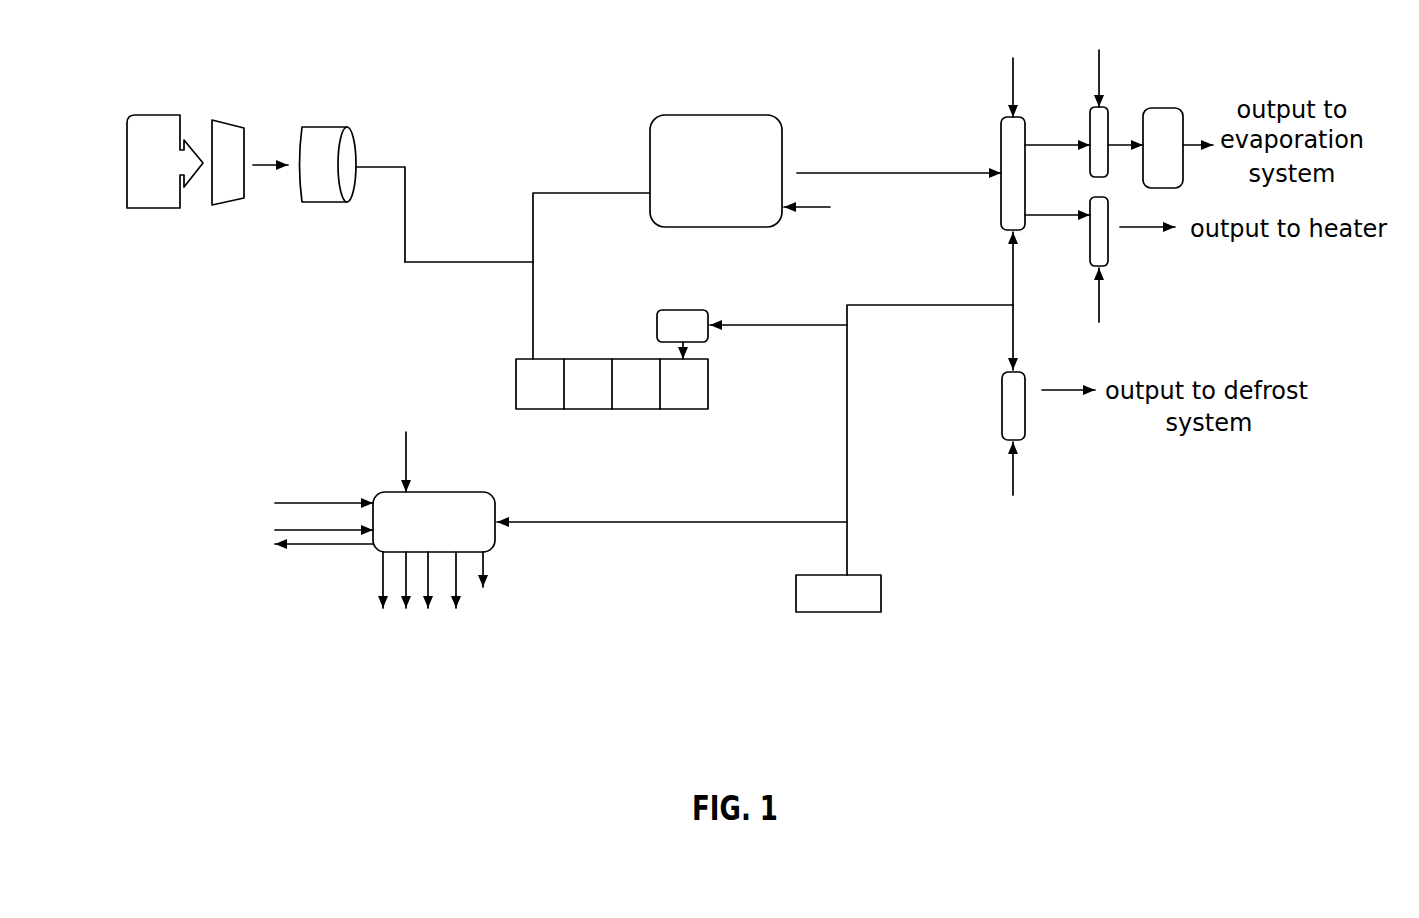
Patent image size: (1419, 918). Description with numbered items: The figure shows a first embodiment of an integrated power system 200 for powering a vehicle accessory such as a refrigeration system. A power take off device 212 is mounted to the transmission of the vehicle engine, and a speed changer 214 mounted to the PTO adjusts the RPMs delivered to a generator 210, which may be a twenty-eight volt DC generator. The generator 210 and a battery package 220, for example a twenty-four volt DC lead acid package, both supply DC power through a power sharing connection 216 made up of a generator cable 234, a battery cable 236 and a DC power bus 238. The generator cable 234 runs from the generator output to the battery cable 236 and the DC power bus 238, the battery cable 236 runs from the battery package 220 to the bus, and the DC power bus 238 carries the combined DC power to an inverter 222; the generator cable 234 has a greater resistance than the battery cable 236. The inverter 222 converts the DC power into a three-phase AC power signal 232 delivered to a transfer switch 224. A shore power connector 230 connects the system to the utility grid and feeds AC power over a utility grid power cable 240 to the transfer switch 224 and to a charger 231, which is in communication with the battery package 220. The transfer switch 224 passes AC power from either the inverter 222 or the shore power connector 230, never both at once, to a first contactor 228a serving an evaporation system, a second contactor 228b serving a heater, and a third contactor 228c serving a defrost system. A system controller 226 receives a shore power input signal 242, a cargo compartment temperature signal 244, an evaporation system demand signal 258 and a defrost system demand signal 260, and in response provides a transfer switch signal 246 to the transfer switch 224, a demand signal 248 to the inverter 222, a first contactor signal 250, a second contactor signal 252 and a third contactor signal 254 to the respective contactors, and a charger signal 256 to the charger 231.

The integrated power system 200 is at (1022, 592).
The generator 210 is at (330, 127).
The power take off (PTO) device 212 is at (153, 115).
The speed changer 214 is at (229, 120).
The power sharing connection 216 is at (470, 262).
The battery package 220 is at (516, 388).
The inverter 222 is at (715, 118).
The transfer switch 224 is at (1001, 145).
The system controller 226 is at (455, 500).
The first contactor 228a is at (1108, 118).
The second contactor 228b is at (1108, 252).
The third contactor 228c is at (1025, 415).
The shore power connector 230 is at (837, 597).
The charger 231 is at (684, 310).
The AC power signal 232 is at (872, 173).
The generator cable 234 is at (405, 233).
The battery cable 236 is at (533, 313).
The DC power bus 238 is at (590, 193).
The utility grid power cable 240 is at (847, 428).
The shore power input signal 242 is at (598, 522).
The cargo compartment temperature signal 244 is at (406, 455).
The transfer switch signal 246 is at (483, 563).
The demand signal 248 is at (456, 590).
The first contactor signal 250 is at (428, 582).
The second contactor signal 252 is at (406, 580).
The third contactor signal 254 is at (383, 575).
The charger signal 256 is at (782, 325).
The evaporation system demand signal 258 is at (290, 530).
The defrost system demand signal 260 is at (305, 503).